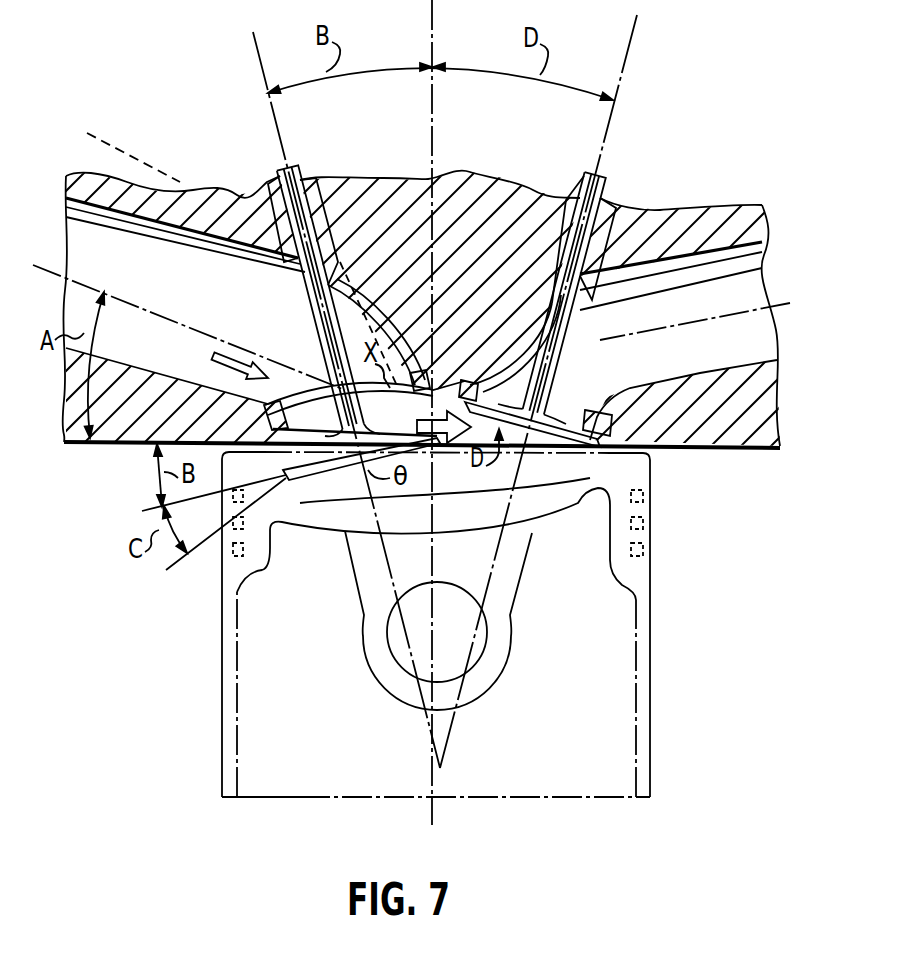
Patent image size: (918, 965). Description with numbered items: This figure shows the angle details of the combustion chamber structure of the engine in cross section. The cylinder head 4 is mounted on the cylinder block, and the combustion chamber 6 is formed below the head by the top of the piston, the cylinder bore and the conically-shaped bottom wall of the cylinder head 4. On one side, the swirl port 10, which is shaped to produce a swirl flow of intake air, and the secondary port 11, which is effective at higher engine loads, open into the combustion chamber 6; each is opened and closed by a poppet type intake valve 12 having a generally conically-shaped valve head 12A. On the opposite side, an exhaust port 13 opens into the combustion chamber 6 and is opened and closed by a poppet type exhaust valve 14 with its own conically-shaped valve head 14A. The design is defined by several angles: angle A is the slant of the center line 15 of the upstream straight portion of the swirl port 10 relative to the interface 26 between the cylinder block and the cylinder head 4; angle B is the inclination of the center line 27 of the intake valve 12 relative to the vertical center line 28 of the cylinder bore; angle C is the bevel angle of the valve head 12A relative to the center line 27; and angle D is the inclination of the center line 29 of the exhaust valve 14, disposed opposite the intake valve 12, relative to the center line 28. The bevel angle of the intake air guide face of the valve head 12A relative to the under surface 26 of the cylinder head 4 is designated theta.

The cylinder head 4 is at (680, 448).
The combustion chamber 6 is at (518, 468).
The swirl port 10 is at (112, 242).
The secondary port 11 is at (180, 182).
The intake valve 12 is at (291, 347).
The valve head 12A is at (345, 490).
The exhaust port 13 is at (684, 270).
The exhaust valve 14 is at (566, 299).
The valve head 14A is at (594, 395).
The center line 15 is at (150, 300).
The interface 26 is at (130, 443).
The center line 27 is at (297, 150).
The center line 28 is at (443, 160).
The center line 29 is at (595, 163).